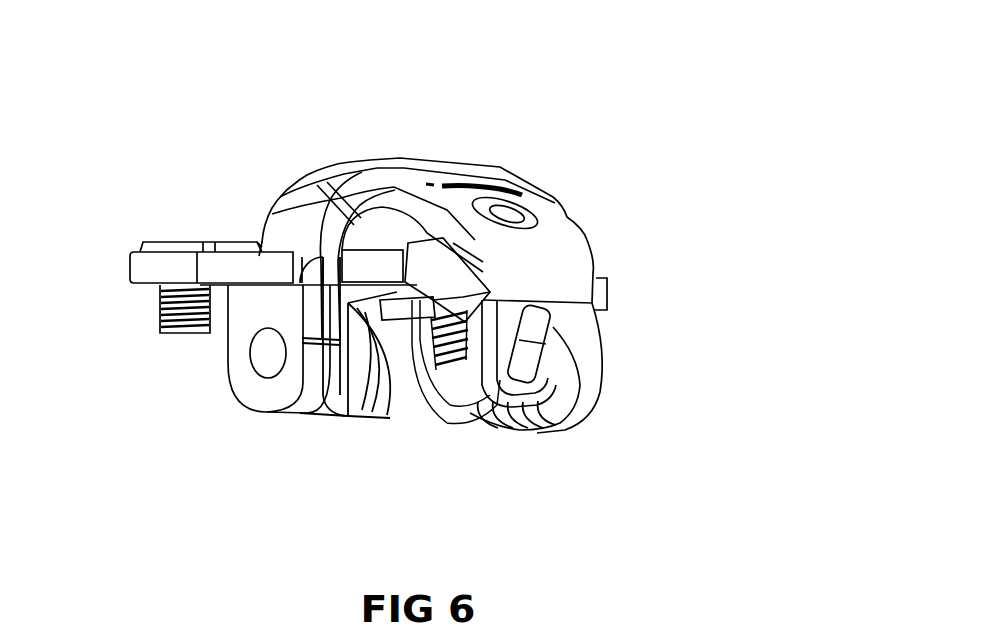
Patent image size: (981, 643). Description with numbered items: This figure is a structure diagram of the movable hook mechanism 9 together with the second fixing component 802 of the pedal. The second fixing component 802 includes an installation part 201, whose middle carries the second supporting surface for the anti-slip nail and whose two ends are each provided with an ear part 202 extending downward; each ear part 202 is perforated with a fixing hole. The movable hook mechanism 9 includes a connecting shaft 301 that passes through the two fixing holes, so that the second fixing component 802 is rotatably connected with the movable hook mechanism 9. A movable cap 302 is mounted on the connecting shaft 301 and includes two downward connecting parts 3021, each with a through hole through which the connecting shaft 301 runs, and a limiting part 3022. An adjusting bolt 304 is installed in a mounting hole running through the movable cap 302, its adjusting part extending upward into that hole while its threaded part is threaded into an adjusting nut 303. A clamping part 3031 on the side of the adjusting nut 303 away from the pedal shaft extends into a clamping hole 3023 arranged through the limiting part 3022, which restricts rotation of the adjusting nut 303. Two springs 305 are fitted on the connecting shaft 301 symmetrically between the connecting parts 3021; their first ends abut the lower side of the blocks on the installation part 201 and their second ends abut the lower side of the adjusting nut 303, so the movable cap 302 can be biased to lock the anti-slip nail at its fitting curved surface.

The movable hook mechanism 9 is at (597, 202).
The installation part 201 is at (160, 275).
The ear part 202 is at (263, 397).
The connecting shaft 301 is at (267, 358).
The movable cap 302 is at (543, 213).
The adjusting nut 303 is at (460, 290).
The adjusting bolt 304 is at (437, 387).
The spring 305 is at (380, 338).
The second fixing component 802 is at (127, 300).
The connecting part 3021 is at (335, 365).
The limiting part 3022 is at (558, 332).
The clamping hole 3023 is at (527, 357).
The clamping part 3031 is at (538, 322).